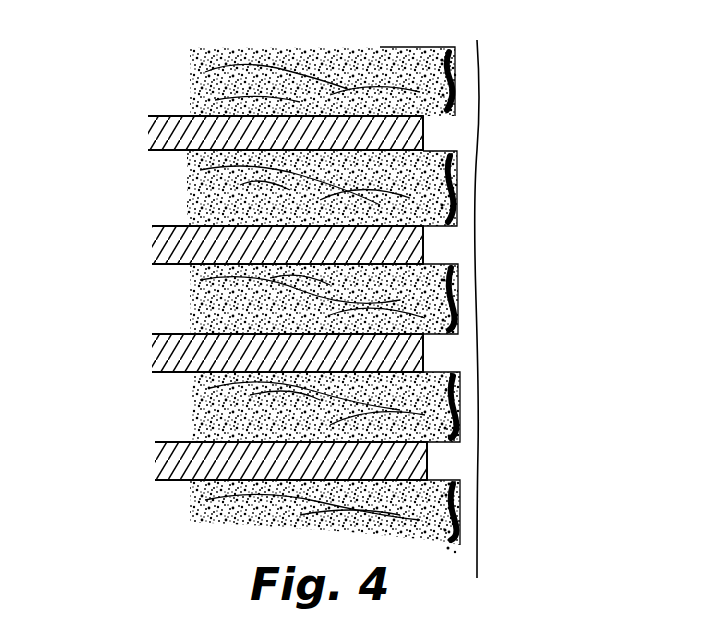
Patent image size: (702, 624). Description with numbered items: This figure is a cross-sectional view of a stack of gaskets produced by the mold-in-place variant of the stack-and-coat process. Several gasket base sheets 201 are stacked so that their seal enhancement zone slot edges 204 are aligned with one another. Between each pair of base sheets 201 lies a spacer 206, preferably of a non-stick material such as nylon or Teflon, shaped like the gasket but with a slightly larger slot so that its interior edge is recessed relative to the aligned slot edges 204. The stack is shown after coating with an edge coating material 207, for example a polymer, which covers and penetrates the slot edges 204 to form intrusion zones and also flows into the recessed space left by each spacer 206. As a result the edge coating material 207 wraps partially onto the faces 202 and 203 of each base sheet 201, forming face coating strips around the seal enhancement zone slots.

The gasket base sheet 201 is at (173, 188).
The face of base sheet 202 is at (175, 150).
The face of base sheet 203 is at (152, 236).
The seal enhancement zone slot edge 204 is at (455, 69).
The spacer 206 is at (303, 128).
The edge coating material 207 is at (473, 108).